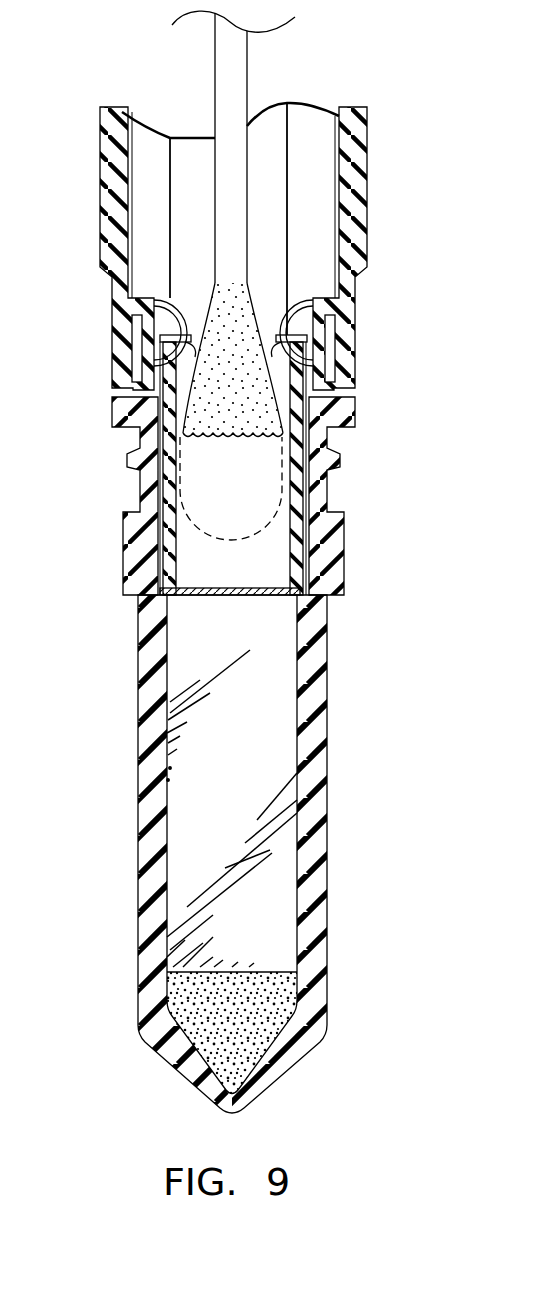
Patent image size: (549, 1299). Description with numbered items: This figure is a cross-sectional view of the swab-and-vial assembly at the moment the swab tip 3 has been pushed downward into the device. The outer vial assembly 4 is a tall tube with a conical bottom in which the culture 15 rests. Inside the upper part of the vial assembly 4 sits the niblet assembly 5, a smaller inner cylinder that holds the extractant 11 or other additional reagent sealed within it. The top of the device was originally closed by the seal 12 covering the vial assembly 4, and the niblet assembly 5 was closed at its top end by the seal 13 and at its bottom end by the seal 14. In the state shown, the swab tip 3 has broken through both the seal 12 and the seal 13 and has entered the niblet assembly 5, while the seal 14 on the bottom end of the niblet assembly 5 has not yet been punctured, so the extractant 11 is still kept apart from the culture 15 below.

The swab tip 3 is at (227, 403).
The vial assembly 4 is at (65, 89).
The niblet assembly 5 is at (290, 490).
The extractant 11 is at (237, 560).
The seal 12 is at (296, 308).
The seal 13 is at (300, 385).
The seal 14 is at (260, 592).
The culture 15 is at (248, 1031).